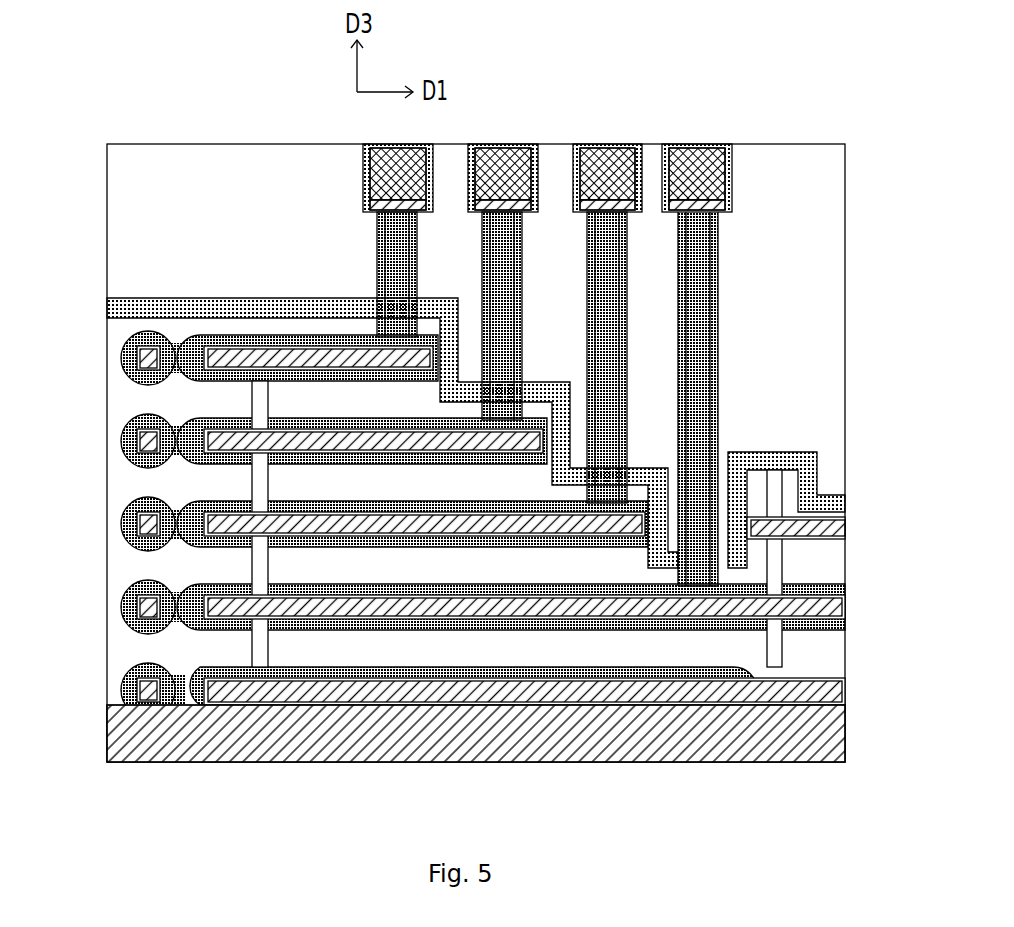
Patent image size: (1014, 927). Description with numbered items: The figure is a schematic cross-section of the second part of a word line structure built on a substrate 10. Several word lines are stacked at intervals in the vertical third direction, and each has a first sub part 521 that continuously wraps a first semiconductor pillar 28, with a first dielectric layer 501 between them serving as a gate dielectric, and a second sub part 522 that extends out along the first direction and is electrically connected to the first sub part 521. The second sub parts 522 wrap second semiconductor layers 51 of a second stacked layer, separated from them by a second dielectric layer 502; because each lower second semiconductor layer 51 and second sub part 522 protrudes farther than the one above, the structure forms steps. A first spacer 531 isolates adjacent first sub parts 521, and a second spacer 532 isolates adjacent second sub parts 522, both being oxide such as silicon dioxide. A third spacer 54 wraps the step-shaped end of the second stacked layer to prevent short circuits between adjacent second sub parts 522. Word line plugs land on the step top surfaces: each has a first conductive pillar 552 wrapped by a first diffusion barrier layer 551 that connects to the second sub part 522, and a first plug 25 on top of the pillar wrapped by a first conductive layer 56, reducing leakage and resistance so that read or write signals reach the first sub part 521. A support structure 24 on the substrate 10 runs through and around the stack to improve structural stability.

The substrate 10 is at (803, 745).
The support structure 24 is at (248, 645).
The first plug 25 is at (690, 162).
The first semiconductor pillar 28 is at (153, 438).
The second semiconductor layer 51 is at (322, 360).
The third spacer 54 is at (135, 300).
The first conductive layer 56 is at (733, 175).
The first dielectric layer 501 is at (133, 383).
The second dielectric layer 502 is at (198, 340).
The first sub part 521 is at (120, 355).
The second sub part 522 is at (252, 337).
The first spacer 531 is at (135, 565).
The second spacer 532 is at (363, 572).
The first diffusion barrier layer 551 is at (715, 443).
The first conductive pillar 552 is at (715, 390).